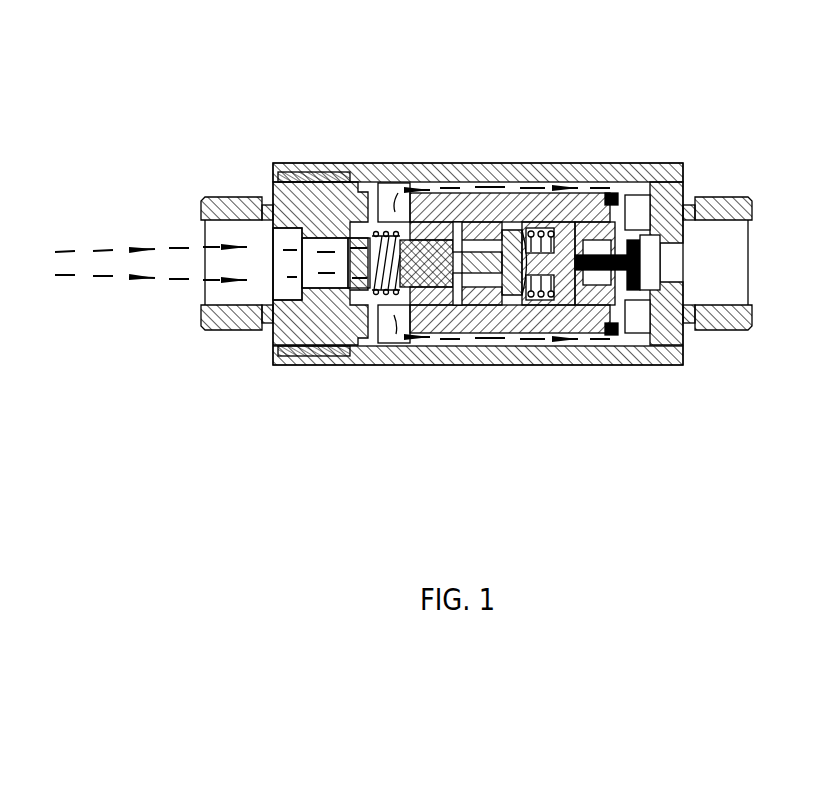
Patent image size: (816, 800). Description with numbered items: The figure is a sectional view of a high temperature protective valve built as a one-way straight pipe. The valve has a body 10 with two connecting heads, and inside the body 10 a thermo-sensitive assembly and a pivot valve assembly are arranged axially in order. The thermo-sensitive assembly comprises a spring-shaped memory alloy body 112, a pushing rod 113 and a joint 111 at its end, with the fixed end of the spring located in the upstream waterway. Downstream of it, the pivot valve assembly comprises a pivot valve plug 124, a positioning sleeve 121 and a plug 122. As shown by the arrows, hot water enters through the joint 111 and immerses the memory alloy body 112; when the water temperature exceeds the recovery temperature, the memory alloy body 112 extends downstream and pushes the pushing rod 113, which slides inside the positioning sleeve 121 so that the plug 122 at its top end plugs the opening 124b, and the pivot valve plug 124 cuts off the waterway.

The body 10 is at (363, 365).
The joint 111 is at (293, 364).
The memory alloy body 112 is at (372, 235).
The pushing rod 113 is at (430, 178).
The positioning sleeve 121 is at (474, 192).
The plug 122 is at (504, 298).
The pivot valve plug 124 is at (620, 213).
The opening 124b is at (533, 272).